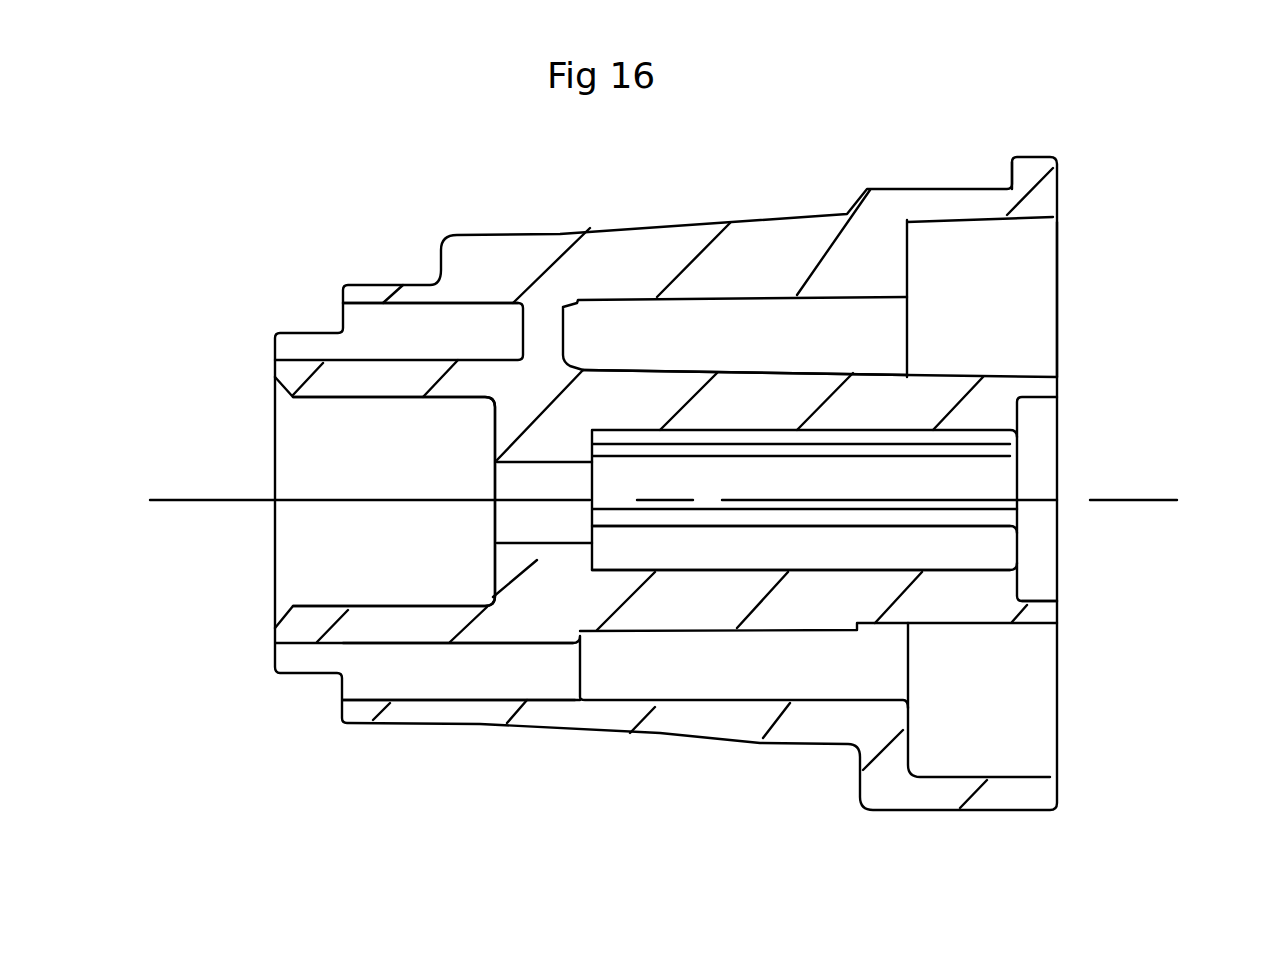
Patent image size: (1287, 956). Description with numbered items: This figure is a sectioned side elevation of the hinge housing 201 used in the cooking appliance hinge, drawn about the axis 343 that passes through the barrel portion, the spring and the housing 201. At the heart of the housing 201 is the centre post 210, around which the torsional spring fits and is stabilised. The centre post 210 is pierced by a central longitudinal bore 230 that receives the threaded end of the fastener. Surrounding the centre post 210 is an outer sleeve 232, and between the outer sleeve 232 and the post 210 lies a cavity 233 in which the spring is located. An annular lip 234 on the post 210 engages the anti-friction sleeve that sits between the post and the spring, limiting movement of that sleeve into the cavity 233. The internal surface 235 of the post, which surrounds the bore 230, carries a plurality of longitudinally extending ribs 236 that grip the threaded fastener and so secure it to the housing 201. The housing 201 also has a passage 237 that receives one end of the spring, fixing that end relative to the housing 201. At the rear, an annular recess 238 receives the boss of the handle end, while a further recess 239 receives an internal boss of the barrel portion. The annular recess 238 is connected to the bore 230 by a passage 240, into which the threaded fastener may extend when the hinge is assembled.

The hinge housing 201 is at (262, 186).
The centre post 210 is at (1020, 377).
The central longitudinal bore 230 is at (1000, 483).
The outer sleeve 232 is at (680, 242).
The cavity 233 is at (785, 357).
The annular lip 234 is at (853, 373).
The internal surface 235 is at (978, 568).
The longitudinally extending ribs 236 is at (990, 448).
The passage 237 is at (487, 723).
The annular recess 238 is at (1037, 593).
The recess 239 is at (305, 468).
The passage 240 is at (550, 567).
The axis 343 is at (228, 508).